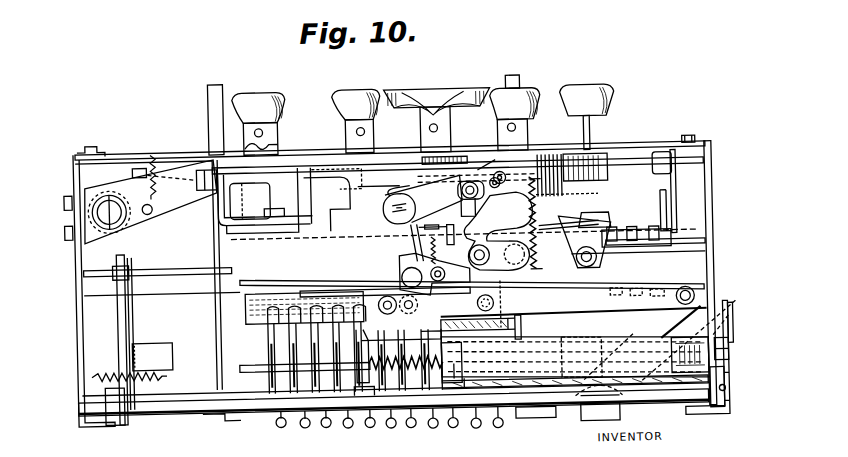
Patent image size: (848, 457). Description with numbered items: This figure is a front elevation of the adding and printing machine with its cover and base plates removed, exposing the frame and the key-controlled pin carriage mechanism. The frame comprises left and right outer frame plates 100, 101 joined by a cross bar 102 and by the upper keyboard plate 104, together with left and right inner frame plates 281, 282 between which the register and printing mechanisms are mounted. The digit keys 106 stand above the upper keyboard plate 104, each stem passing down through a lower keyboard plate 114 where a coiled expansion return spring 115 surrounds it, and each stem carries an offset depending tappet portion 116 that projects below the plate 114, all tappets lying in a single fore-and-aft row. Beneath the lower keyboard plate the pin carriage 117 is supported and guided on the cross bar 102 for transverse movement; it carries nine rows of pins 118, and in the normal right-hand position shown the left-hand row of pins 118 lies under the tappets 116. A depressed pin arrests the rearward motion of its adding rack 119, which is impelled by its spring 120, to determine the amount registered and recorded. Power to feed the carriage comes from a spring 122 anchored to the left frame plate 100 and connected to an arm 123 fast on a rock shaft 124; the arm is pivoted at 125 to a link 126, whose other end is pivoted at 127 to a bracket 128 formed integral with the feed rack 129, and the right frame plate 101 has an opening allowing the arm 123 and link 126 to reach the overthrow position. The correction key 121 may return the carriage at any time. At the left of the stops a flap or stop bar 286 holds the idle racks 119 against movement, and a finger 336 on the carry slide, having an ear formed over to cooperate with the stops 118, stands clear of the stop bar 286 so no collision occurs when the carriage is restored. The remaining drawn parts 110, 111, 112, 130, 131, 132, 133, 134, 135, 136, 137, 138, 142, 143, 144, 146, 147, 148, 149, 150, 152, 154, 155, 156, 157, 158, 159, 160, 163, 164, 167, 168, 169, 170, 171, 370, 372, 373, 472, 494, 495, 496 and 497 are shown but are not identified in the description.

The left outer frame plate 100 is at (75, 318).
The right outer frame plate 101 is at (714, 226).
The cross bar 102 is at (156, 292).
The upper keyboard plate 104 is at (112, 148).
The digit key 106 is at (350, 98).
The key stem 110 is at (278, 129).
The key stem break line 111 is at (281, 144).
The key 112 is at (598, 90).
The lower keyboard plate 114 is at (282, 230).
The coiled expansion return spring 115 is at (410, 190).
The tappet portion 116 is at (508, 191).
The pin carriage 117 is at (336, 260).
The pins 118 is at (634, 234).
The adding rack 119 is at (302, 426).
The spring 120 is at (362, 428).
The correction key 121 is at (520, 330).
The spring 122 is at (94, 368).
The arm 123 is at (632, 342).
The rock shaft 124 is at (604, 412).
The pivot 125 is at (693, 296).
The link 126 is at (473, 296).
The pivot 127 is at (494, 306).
The bracket 128 is at (420, 305).
The feed rack 129 is at (707, 248).
The block 130 is at (606, 256).
The pin 131 is at (444, 278).
The link 132 is at (450, 226).
The pivot 133 is at (576, 264).
The lever 134 is at (588, 256).
The block 135 is at (602, 230).
The cam 136 is at (400, 278).
The link 137 is at (546, 242).
The spring 138 is at (416, 256).
The pin 142 is at (504, 172).
The link 143 is at (482, 170).
The roller 144 is at (385, 210).
The lever 146 is at (398, 226).
The hook member 147 is at (503, 224).
The pivot 148 is at (460, 194).
The roller 149 is at (484, 266).
The comb 150 is at (354, 348).
The roller 152 is at (380, 298).
The plate 154 is at (420, 295).
The member 155 is at (552, 348).
The link 156 is at (735, 308).
The terminal 157 is at (464, 394).
The pin 158 is at (430, 374).
The link 159 is at (602, 346).
The block 160 is at (668, 355).
The post 163 is at (733, 320).
The block 164 is at (724, 348).
The spring 167 is at (392, 372).
The bracket 168 is at (366, 386).
The plate 169 is at (476, 346).
The bar 170 is at (444, 320).
The bar 171 is at (330, 370).
The left inner frame plate 281 is at (515, 77).
The right inner frame plate 282 is at (216, 80).
The flap or stop bar 286 is at (243, 309).
The finger 336 is at (153, 210).
The bracket 370 is at (672, 228).
The plate 372 is at (680, 190).
The rail 373 is at (626, 165).
The lever 472 is at (135, 171).
The box 494 is at (134, 331).
The post 495 is at (117, 312).
The bottom rail 496 is at (166, 410).
The bracket 497 is at (733, 364).